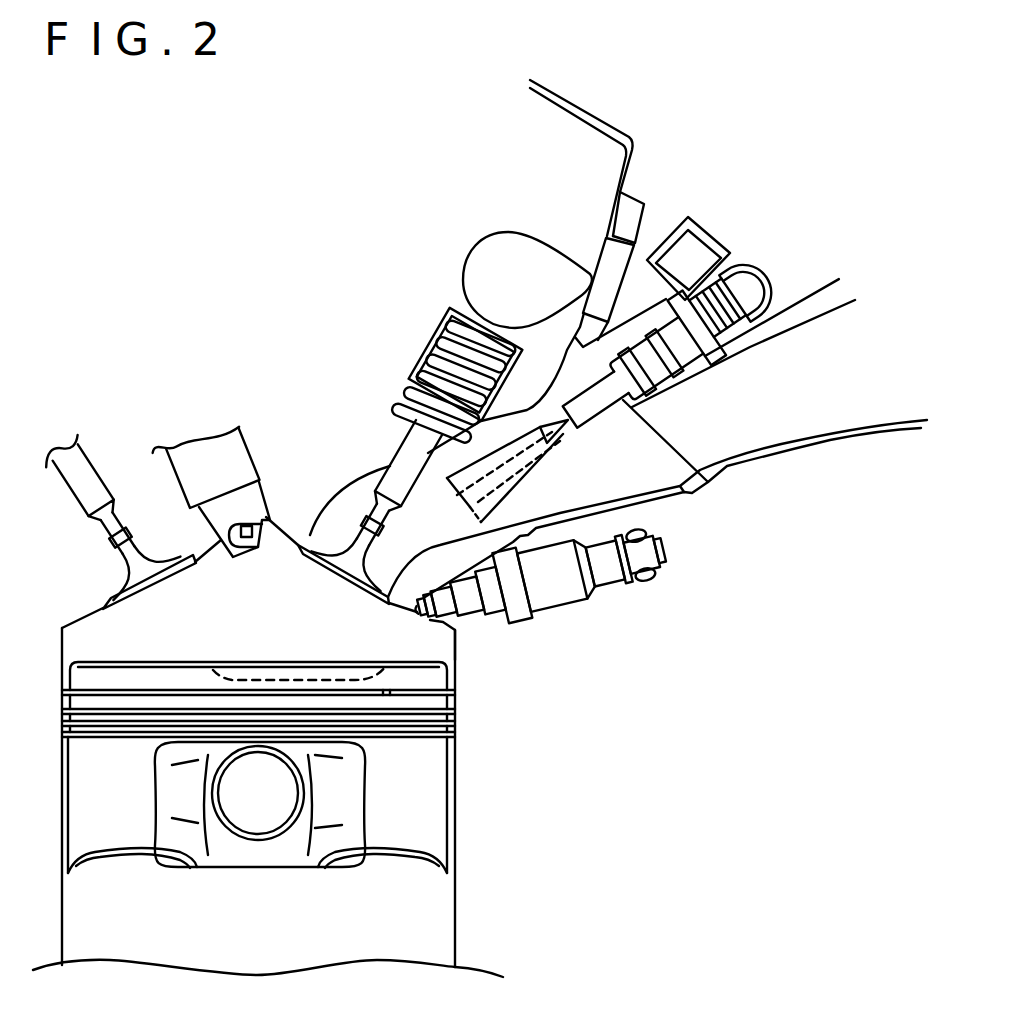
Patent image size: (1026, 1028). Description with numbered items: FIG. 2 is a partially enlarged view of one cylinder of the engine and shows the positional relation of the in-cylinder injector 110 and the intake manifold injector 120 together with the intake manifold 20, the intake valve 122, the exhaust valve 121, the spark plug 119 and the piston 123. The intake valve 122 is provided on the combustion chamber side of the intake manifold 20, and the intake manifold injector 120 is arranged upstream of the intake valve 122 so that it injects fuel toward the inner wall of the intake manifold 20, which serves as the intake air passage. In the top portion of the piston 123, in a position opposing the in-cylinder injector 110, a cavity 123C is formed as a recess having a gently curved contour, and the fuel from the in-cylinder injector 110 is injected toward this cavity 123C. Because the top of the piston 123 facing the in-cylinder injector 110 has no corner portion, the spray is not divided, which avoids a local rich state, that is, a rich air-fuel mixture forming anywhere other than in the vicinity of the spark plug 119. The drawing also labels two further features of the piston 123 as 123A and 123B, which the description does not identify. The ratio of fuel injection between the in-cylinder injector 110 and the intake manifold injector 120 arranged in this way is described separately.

The intake manifold 20 is at (758, 425).
The in-cylinder injector 110 is at (565, 598).
The spark plug 119 is at (237, 448).
The intake manifold injector 120 is at (610, 408).
The exhaust valve 121 is at (148, 585).
The intake valve 122 is at (328, 560).
The piston 123 is at (438, 795).
The piston pin 123A is at (288, 812).
The pin boss 123B is at (220, 835).
The cavity 123C is at (322, 680).